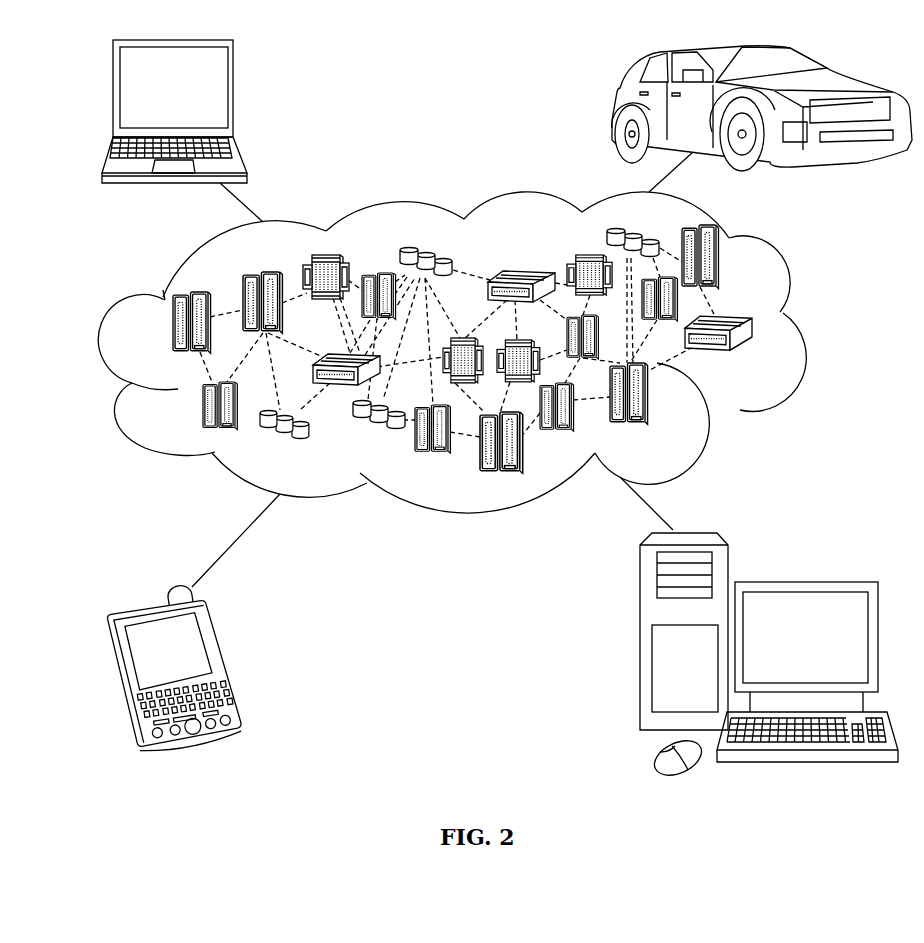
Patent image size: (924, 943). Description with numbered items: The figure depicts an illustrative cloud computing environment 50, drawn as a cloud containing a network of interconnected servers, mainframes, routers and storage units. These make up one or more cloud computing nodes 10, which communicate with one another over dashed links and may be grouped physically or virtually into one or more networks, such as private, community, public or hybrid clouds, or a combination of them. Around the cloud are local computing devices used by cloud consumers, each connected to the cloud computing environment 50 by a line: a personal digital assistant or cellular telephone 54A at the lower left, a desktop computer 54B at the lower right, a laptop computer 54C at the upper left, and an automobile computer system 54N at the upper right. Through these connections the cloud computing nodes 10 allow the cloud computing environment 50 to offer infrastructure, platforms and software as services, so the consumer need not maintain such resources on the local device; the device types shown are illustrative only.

The cloud computing nodes 10 is at (755, 355).
The cloud computing environment 50 is at (804, 328).
The personal digital assistant or cellular telephone 54A is at (225, 663).
The desktop computer 54B is at (804, 580).
The laptop computer 54C is at (233, 93).
The automobile computer system 54N is at (613, 107).